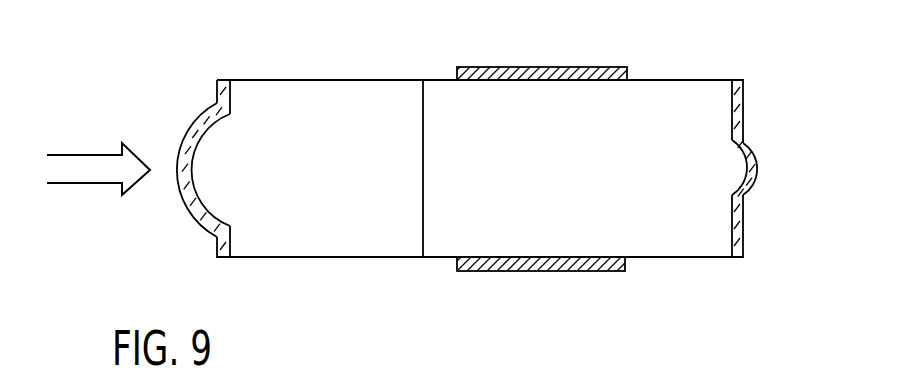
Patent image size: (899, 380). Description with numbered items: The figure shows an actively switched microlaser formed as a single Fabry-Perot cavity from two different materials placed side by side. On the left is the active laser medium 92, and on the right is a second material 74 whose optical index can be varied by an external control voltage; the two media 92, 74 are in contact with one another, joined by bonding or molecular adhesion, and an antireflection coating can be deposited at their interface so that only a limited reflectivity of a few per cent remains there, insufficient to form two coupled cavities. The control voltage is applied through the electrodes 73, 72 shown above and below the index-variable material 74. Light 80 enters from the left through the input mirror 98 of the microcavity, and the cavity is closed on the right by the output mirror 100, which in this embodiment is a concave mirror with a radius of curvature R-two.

The active laser medium 92 is at (284, 88).
The index-variable material 74 is at (637, 93).
The electrode 73 is at (487, 67).
The electrode 72 is at (524, 263).
The input mirror 98 is at (204, 214).
The output mirror 100 is at (738, 127).
The pump beam 80 is at (98, 180).